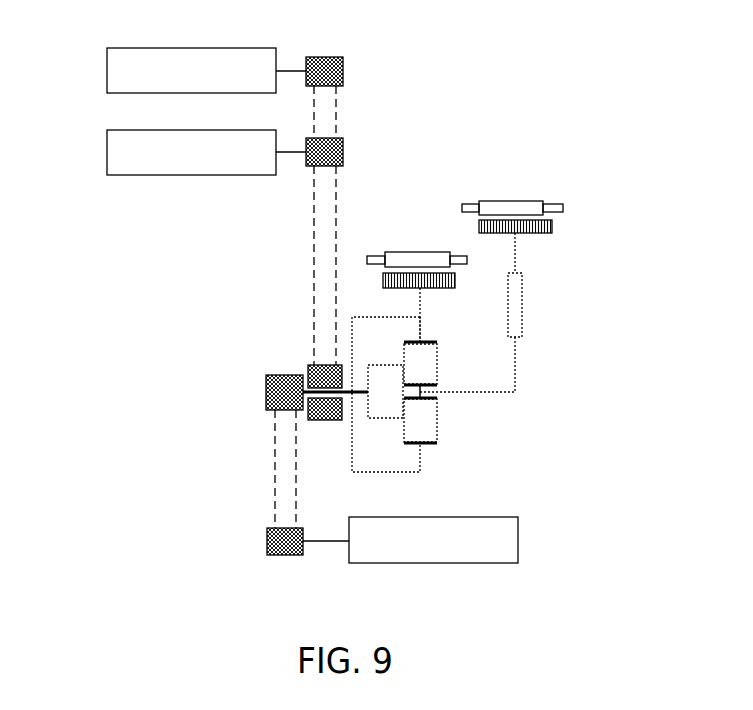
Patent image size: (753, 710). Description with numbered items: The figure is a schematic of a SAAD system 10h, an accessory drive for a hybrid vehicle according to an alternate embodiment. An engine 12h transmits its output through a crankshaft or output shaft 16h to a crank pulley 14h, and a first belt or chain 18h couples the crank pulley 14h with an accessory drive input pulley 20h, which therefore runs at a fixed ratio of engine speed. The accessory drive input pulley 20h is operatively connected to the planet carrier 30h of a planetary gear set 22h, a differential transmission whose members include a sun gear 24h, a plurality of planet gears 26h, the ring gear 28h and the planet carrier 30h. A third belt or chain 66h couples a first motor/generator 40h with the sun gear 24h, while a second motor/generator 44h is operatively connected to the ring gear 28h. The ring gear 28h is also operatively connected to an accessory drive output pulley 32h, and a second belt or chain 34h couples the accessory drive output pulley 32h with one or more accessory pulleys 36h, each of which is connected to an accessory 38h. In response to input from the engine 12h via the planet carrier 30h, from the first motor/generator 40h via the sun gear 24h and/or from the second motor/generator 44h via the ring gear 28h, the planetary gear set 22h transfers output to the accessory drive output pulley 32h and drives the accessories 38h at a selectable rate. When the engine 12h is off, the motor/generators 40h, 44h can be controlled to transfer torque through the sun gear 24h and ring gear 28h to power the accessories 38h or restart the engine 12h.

The SAAD system 10h is at (615, 110).
The engine 12h is at (485, 563).
The crank pulley 14h is at (278, 557).
The output shaft 16h is at (313, 542).
The first belt or chain 18h is at (272, 483).
The accessory drive input pulley 20h is at (268, 378).
The planetary gear set 22h is at (444, 477).
The sun gear 24h is at (438, 383).
The planet gears 26h is at (410, 357).
The ring gear 28h is at (428, 341).
The planet carrier 30h is at (377, 418).
The accessory drive output pulley 32h is at (316, 422).
The second belt or chain 34h is at (311, 227).
The accessory pulleys 36h is at (328, 57).
The accessories 38h is at (118, 48).
The first motor/generator 40h is at (539, 197).
The second motor/generator 44h is at (414, 250).
The third belt or chain 66h is at (528, 308).